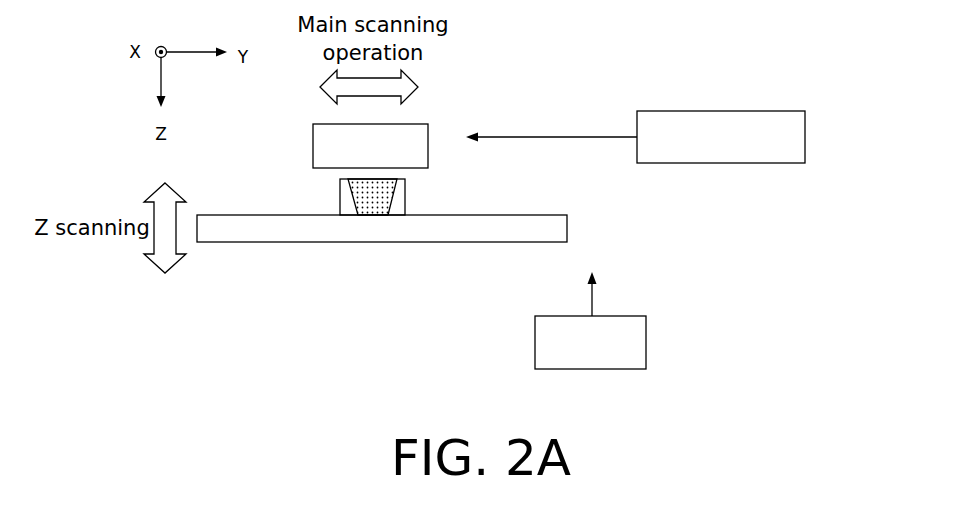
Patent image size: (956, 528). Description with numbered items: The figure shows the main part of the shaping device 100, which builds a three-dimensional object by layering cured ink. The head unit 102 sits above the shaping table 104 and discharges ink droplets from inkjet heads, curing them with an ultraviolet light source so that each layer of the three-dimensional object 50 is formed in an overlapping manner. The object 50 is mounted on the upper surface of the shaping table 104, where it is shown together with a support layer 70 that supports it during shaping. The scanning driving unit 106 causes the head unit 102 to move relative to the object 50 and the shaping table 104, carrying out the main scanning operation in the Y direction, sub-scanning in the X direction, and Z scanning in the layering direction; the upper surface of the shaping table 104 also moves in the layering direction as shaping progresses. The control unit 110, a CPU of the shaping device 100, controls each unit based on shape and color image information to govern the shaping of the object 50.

The shaping device 100 is at (800, 26).
The head unit 102 is at (322, 151).
The shaping table 104 is at (264, 233).
The scanning driving unit 106 is at (737, 110).
The control unit 110 is at (626, 317).
The 3D object 50 is at (375, 198).
The support layer 70 is at (402, 197).